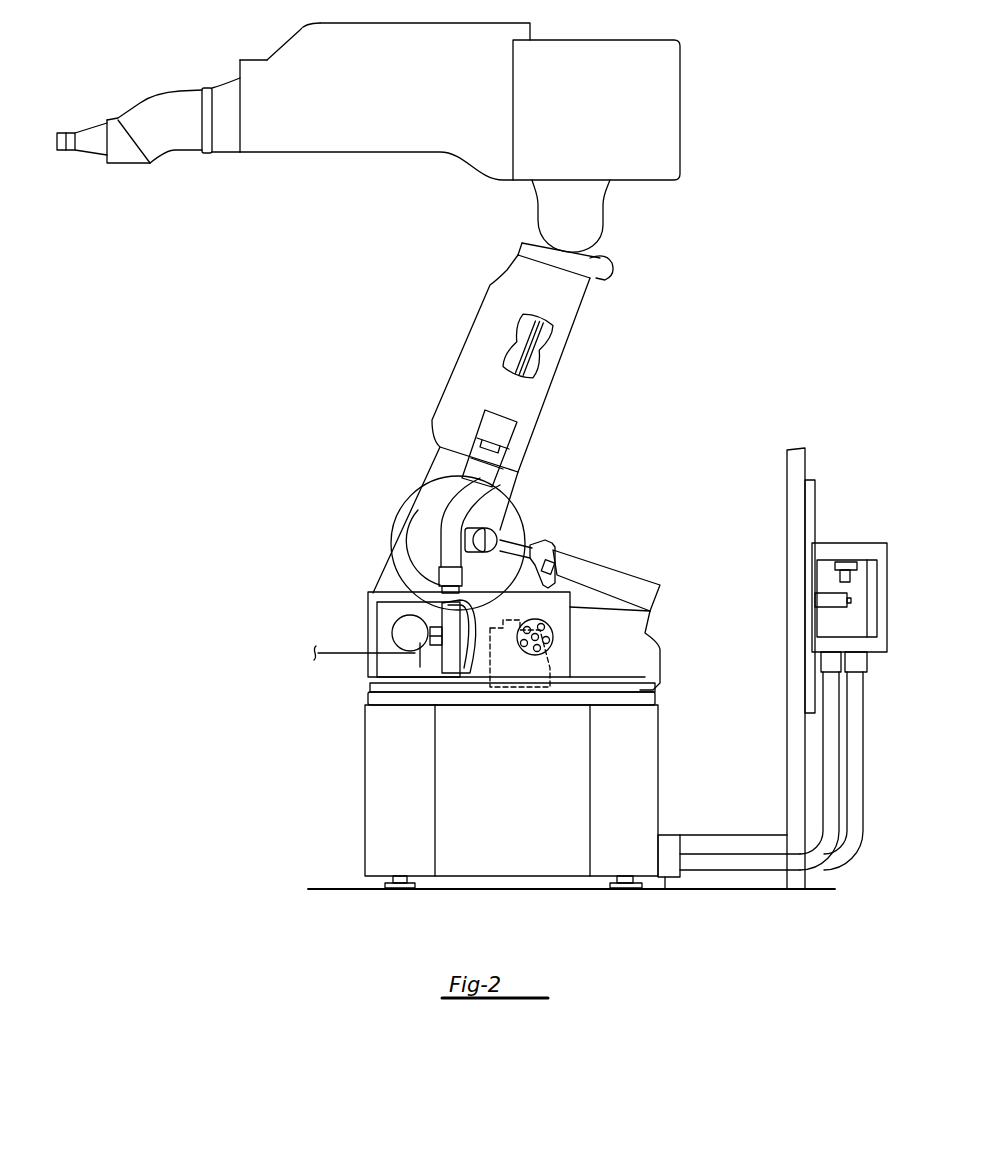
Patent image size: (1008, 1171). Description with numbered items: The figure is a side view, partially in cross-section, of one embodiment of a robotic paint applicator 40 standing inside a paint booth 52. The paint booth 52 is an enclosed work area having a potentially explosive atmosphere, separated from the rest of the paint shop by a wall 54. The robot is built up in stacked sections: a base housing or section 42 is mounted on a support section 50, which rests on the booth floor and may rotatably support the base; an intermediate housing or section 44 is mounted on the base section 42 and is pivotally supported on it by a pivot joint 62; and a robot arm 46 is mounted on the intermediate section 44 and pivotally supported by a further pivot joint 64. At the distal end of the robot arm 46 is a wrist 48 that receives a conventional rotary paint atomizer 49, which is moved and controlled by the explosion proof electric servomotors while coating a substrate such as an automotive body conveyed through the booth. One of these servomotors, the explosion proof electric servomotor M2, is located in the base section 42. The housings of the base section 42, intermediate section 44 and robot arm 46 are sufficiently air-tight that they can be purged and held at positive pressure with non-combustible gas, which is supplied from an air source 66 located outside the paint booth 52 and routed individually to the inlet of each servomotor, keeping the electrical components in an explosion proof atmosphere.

The robotic paint applicator 40 is at (208, 492).
The base housing or section 42 is at (366, 628).
The intermediate housing or section 44 is at (470, 352).
The robot arm 46 is at (361, 158).
The wrist 48 is at (148, 152).
The rotary paint atomizer 49 is at (83, 153).
The support section 50 is at (356, 823).
The paint booth 52 is at (692, 441).
The wall 54 is at (787, 563).
The pivot joint 62 is at (408, 502).
The pivot joint 64 is at (590, 223).
The source of non-combustible gas or air source 66 is at (840, 550).
The explosion proof electric servomotor M2 is at (400, 625).